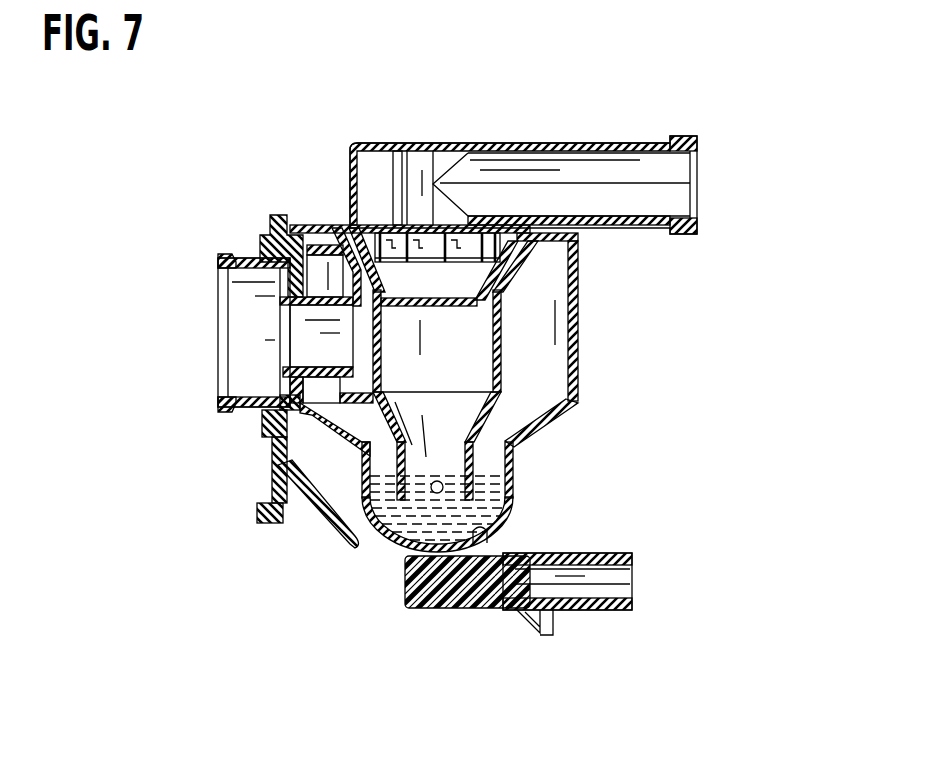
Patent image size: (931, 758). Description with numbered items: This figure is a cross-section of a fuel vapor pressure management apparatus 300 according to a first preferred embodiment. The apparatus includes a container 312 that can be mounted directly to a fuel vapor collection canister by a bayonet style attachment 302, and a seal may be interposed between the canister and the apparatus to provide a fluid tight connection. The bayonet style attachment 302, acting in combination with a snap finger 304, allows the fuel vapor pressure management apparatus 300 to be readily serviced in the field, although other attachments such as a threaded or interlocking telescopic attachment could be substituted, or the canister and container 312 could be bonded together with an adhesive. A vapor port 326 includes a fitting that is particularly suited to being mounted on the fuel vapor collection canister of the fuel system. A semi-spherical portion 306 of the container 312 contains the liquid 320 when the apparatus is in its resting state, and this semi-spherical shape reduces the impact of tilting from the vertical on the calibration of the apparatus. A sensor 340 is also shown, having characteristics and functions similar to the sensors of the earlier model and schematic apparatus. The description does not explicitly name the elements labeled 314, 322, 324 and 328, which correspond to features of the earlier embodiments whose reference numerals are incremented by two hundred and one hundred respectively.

The fuel vapor pressure management apparatus 300 is at (204, 205).
The bayonet style attachment 302 is at (252, 410).
The snap finger 304 is at (292, 512).
The semi-spherical portion 306 is at (477, 533).
The container 312 is at (512, 450).
The inner neck 314 is at (478, 482).
The liquid 320 is at (437, 540).
The strainer cup 322 is at (467, 370).
The housing 324 is at (544, 327).
The vapor port 326 is at (228, 393).
The upper tube 328 is at (678, 152).
The sensor 340 is at (432, 490).